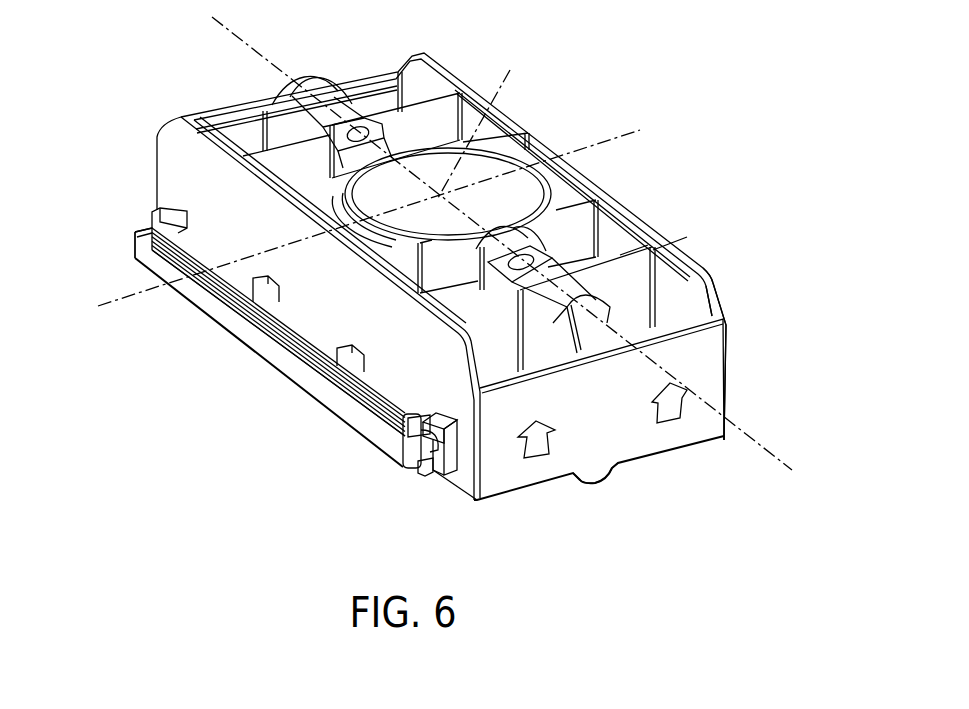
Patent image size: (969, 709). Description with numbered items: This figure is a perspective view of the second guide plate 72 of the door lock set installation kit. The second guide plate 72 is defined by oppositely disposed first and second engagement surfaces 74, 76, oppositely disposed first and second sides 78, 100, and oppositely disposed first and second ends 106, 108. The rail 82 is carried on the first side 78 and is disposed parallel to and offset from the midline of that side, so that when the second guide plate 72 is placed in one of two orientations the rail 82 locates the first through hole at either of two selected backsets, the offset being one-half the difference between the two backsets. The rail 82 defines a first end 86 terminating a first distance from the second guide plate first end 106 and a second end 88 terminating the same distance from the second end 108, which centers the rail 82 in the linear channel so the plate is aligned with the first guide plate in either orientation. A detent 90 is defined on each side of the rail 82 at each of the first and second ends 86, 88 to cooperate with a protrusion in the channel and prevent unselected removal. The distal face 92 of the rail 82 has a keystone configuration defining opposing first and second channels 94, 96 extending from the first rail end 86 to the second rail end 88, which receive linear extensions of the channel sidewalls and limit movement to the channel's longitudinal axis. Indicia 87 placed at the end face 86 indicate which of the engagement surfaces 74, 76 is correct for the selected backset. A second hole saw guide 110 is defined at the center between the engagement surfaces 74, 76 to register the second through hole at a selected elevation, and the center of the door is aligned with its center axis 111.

The second guide plate 72 is at (624, 72).
The first engagement surface 74 is at (325, 97).
The second engagement surface 76 is at (598, 486).
The first side 78 is at (427, 368).
The rail 82 is at (217, 322).
The first end of the rail 86 is at (441, 455).
The indicia 87 is at (671, 407).
The second end of the rail 88 is at (133, 243).
The detent 90 is at (163, 215).
The distal face of the rail 92 is at (293, 368).
The first channel 94 is at (430, 477).
The second channel 96 is at (402, 432).
The second side 100 is at (726, 313).
The first end 106 is at (498, 470).
The second end 108 is at (213, 113).
The second hole saw guide 110 is at (510, 193).
The center axis 111 is at (483, 119).